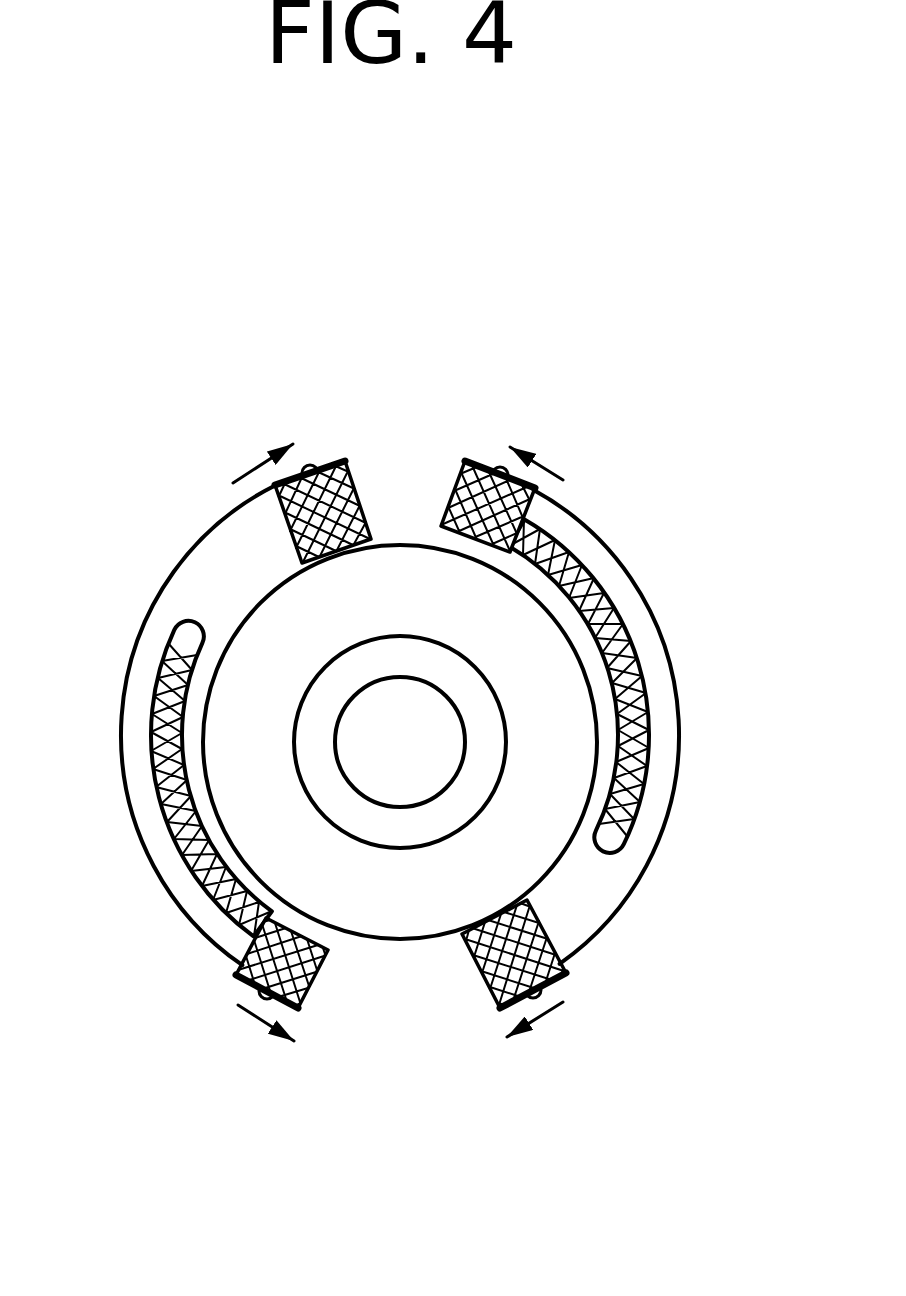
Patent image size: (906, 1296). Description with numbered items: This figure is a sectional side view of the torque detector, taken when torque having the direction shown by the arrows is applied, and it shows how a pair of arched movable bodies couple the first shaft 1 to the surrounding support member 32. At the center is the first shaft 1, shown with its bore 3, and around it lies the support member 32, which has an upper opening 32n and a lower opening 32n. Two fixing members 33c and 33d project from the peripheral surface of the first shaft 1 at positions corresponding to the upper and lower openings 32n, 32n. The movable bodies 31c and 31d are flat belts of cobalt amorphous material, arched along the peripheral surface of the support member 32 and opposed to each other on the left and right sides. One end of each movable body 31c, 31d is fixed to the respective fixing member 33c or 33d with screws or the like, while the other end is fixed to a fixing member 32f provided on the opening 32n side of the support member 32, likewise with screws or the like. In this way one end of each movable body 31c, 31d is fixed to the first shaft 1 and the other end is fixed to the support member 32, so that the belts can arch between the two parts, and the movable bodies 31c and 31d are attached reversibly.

The first shaft 1 is at (385, 563).
The shaft 3 is at (400, 760).
The movable body 31c is at (183, 560).
The movable body 31d is at (667, 667).
The support member 32 is at (593, 592).
The fixing member 32f is at (520, 510).
The opening 32n is at (410, 528).
The fixing member 33c is at (287, 547).
The fixing member 33d is at (538, 928).